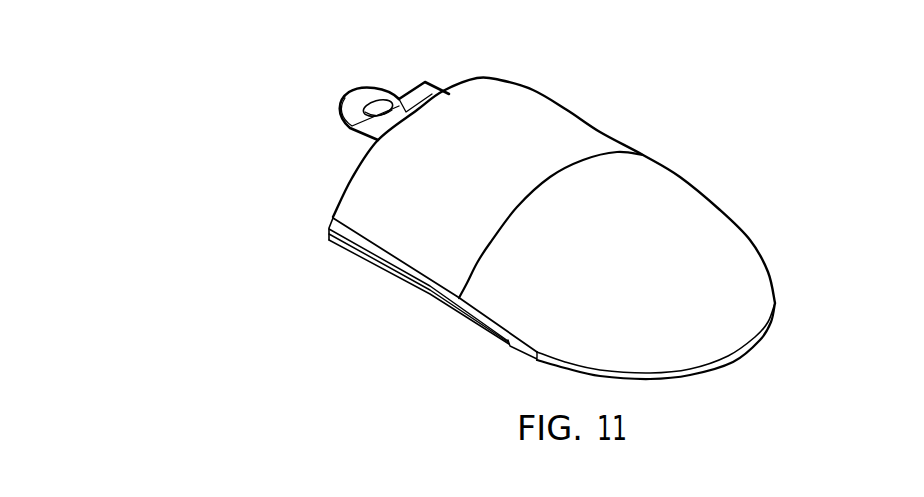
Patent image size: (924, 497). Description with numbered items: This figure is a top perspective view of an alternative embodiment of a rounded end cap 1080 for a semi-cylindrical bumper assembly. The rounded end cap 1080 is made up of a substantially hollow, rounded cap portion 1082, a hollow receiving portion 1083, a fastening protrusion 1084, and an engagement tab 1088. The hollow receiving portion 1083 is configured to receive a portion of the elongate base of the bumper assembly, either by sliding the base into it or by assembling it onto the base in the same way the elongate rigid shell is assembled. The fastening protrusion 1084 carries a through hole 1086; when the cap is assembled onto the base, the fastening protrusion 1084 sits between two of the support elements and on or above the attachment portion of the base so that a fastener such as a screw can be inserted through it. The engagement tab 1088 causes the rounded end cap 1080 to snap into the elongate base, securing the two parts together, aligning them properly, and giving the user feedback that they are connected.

The rounded end cap 1080 is at (711, 154).
The rounded cap portion 1082 is at (710, 247).
The hollow receiving portion 1083 is at (342, 195).
The fastening protrusion 1084 is at (352, 117).
The through hole 1086 is at (378, 102).
The engagement tab 1088 is at (422, 88).